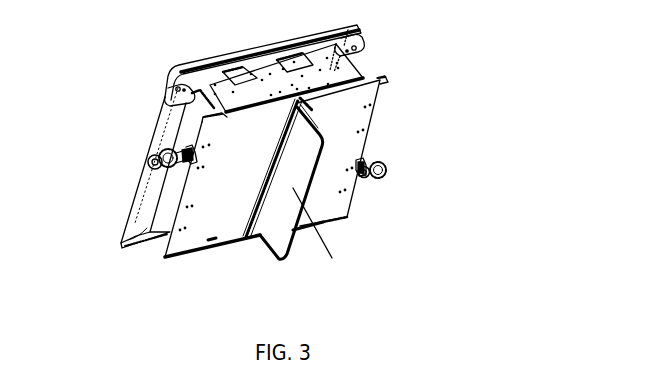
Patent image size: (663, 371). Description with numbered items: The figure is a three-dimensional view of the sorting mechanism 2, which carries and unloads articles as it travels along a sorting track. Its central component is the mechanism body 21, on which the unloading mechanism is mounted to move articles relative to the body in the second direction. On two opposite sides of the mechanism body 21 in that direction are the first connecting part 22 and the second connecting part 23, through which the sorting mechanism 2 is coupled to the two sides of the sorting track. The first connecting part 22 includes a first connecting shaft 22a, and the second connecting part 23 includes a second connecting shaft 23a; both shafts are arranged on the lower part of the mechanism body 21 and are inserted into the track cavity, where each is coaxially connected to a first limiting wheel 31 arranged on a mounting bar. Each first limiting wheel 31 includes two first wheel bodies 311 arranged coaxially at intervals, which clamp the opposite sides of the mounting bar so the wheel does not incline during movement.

The sorting mechanism 2 is at (282, 155).
The mechanism body 21 is at (337, 73).
The first connecting part 22 is at (360, 170).
The first connecting shaft 22a is at (363, 158).
The second connecting part 23 is at (193, 120).
The second connecting shaft 23a is at (188, 150).
The first limiting wheel 31 is at (152, 155).
The first wheel body 311 is at (147, 168).